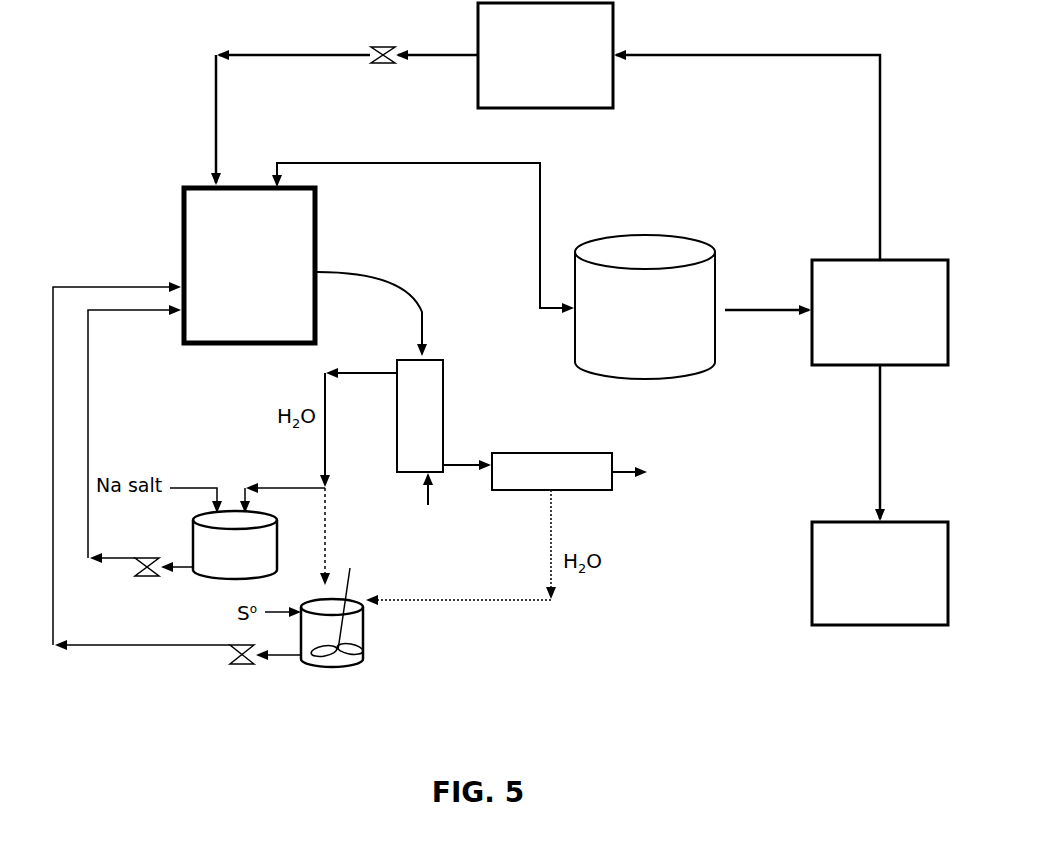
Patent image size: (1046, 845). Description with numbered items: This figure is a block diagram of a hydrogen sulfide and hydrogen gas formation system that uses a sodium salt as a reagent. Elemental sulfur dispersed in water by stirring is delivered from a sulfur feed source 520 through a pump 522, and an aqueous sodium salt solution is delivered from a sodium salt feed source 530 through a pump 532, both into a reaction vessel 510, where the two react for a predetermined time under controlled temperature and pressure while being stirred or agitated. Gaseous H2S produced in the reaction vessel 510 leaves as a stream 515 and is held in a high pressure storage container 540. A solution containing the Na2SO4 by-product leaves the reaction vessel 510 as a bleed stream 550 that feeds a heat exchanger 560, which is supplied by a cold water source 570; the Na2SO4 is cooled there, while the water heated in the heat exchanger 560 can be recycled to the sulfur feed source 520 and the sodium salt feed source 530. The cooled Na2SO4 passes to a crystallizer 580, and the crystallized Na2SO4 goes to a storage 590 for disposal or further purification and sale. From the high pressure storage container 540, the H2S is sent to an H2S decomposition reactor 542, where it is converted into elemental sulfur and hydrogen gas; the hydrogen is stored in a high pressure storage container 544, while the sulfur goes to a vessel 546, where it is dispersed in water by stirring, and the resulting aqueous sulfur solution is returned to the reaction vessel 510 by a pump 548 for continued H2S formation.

The reaction vessel 510 is at (249, 265).
The stream 515 is at (424, 222).
The sulfur feed source 520 is at (376, 652).
The pump 522 is at (226, 676).
The sodium salt feed source 530 is at (235, 545).
The pump 532 is at (138, 589).
The high pressure storage container 540 is at (645, 307).
The H2S decomposition reactor 542 is at (880, 312).
The high pressure storage container 544 is at (880, 573).
The vessel 546 is at (545, 55).
The pump 548 is at (372, 73).
The bleed stream 550 is at (369, 305).
The heat exchanger 560 is at (450, 407).
The cold water source 570 is at (430, 504).
The crystallizer 580 is at (556, 444).
The storage 590 is at (654, 473).